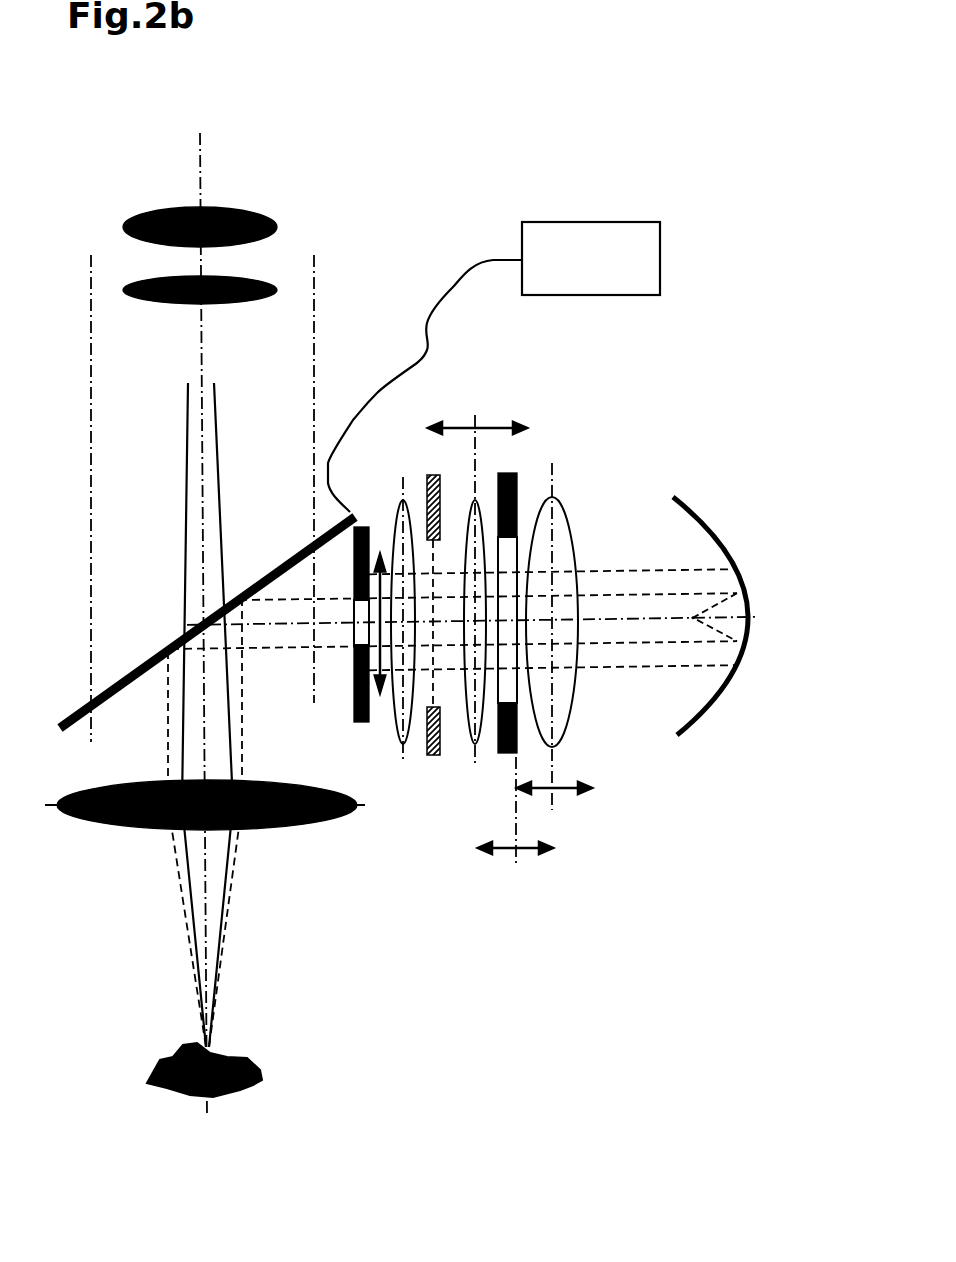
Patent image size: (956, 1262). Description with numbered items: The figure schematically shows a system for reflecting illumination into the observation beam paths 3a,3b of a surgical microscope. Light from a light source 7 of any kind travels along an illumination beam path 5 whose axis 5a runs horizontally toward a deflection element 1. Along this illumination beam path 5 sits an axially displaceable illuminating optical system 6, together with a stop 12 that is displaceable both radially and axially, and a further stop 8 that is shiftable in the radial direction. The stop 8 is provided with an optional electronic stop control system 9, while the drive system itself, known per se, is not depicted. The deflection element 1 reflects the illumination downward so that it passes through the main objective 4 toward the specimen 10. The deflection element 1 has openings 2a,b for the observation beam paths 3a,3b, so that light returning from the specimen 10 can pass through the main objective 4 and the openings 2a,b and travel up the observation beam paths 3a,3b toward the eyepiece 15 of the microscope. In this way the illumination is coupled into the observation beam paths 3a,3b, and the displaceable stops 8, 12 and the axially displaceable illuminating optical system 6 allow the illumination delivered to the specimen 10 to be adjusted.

The deflection element 1 is at (290, 550).
The openings for observation beam paths 2a,b is at (183, 623).
The observation beam paths 3a,3b is at (215, 441).
The main objective 4 is at (270, 828).
The illumination beam path 5 is at (613, 607).
The axis of illumination beam path 5a is at (650, 617).
The illuminating optical system 6 is at (540, 730).
The light source 7 is at (688, 628).
The stop 8 is at (362, 722).
The electronic stop control system 9 is at (591, 258).
The specimen 10 is at (177, 1055).
The stop 12 is at (440, 485).
The eyepiece 15 is at (248, 252).